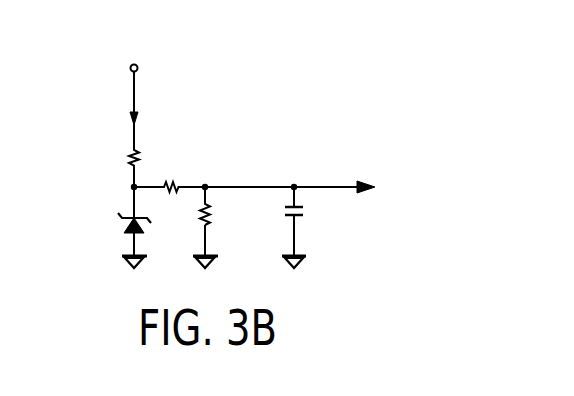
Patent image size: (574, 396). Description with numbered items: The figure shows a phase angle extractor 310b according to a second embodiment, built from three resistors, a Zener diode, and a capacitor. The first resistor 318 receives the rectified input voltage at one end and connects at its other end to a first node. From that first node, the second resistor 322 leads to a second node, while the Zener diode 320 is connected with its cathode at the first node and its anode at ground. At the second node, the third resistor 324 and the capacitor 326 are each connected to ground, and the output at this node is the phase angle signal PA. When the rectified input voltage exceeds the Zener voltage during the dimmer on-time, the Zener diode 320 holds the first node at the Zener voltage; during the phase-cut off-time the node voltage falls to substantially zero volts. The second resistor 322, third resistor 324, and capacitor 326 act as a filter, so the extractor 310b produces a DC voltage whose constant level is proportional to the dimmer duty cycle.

The PA extractor 310b is at (83, 22).
The first resistor 318 is at (132, 148).
The Zener diode 320 is at (122, 233).
The second resistor 322 is at (162, 182).
The third resistor 324 is at (208, 216).
The capacitor 326 is at (297, 213).